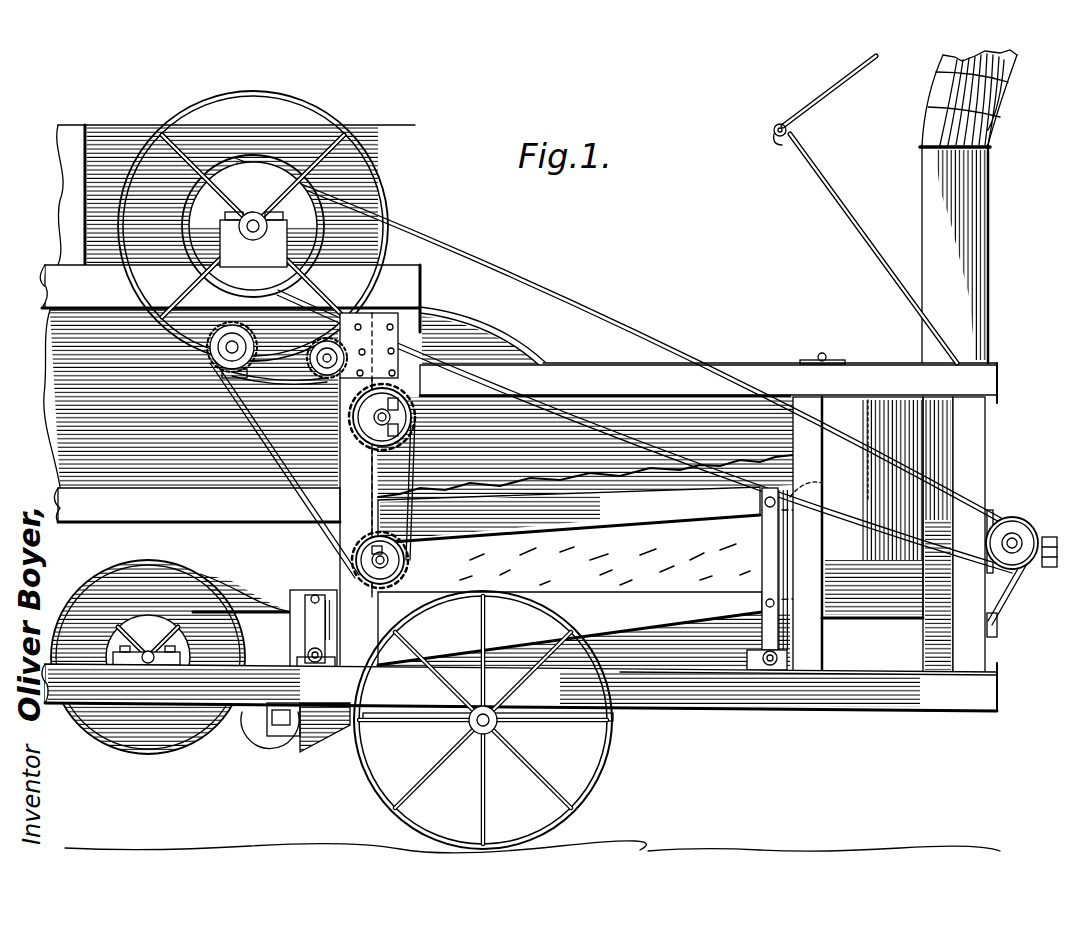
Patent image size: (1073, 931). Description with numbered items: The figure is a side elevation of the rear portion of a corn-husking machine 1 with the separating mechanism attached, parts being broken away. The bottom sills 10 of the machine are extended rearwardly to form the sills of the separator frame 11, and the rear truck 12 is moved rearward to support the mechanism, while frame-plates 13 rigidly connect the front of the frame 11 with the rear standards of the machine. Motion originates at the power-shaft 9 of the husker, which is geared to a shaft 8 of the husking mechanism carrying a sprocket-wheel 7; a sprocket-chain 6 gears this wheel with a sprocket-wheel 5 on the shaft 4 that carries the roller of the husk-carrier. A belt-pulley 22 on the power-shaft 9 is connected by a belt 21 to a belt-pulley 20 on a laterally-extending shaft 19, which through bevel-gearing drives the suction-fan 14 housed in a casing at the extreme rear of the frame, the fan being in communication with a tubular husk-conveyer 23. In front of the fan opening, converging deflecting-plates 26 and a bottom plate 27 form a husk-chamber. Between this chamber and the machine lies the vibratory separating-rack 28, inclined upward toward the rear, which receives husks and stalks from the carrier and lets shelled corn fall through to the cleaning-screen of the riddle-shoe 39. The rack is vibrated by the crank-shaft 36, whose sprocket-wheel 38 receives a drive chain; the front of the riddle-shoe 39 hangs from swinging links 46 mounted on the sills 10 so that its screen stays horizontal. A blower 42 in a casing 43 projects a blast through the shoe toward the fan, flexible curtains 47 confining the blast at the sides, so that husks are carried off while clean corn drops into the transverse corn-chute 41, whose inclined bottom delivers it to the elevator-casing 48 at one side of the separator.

The machine 1 is at (46, 389).
The shaft 4 is at (382, 417).
The sprocket-wheel 5 is at (350, 413).
The sprocket-chain 6 is at (282, 467).
The sprocket-wheel 7 is at (240, 368).
The shaft 8 is at (228, 356).
The power-shaft 9 is at (253, 220).
The bottom sills 10 is at (519, 687).
The frame 11 is at (786, 696).
The rear truck 12 is at (483, 720).
The frame-plates 13 is at (432, 321).
The suction-fan 14 is at (939, 535).
The laterally-extending shaft 19 is at (1014, 534).
The belt-pulley 20 is at (1017, 563).
The belt 21 is at (560, 293).
The belt-pulley 22 is at (258, 148).
The tubular husk-conveyer 23 is at (980, 271).
The deflecting-plates 26 is at (856, 578).
The bottom plate 27 is at (888, 616).
The separating-rack 28 is at (569, 515).
The crank-shaft 36 is at (372, 532).
The sprocket-wheel 38 is at (409, 560).
The riddle-shoe 39 is at (322, 633).
The corn-chute 41 is at (263, 732).
The blower 42 is at (171, 626).
The casing 43 is at (116, 570).
The swinging links 46 is at (315, 595).
The flexible side walls or curtains 47 is at (605, 564).
The elevator-casing 48 is at (325, 724).